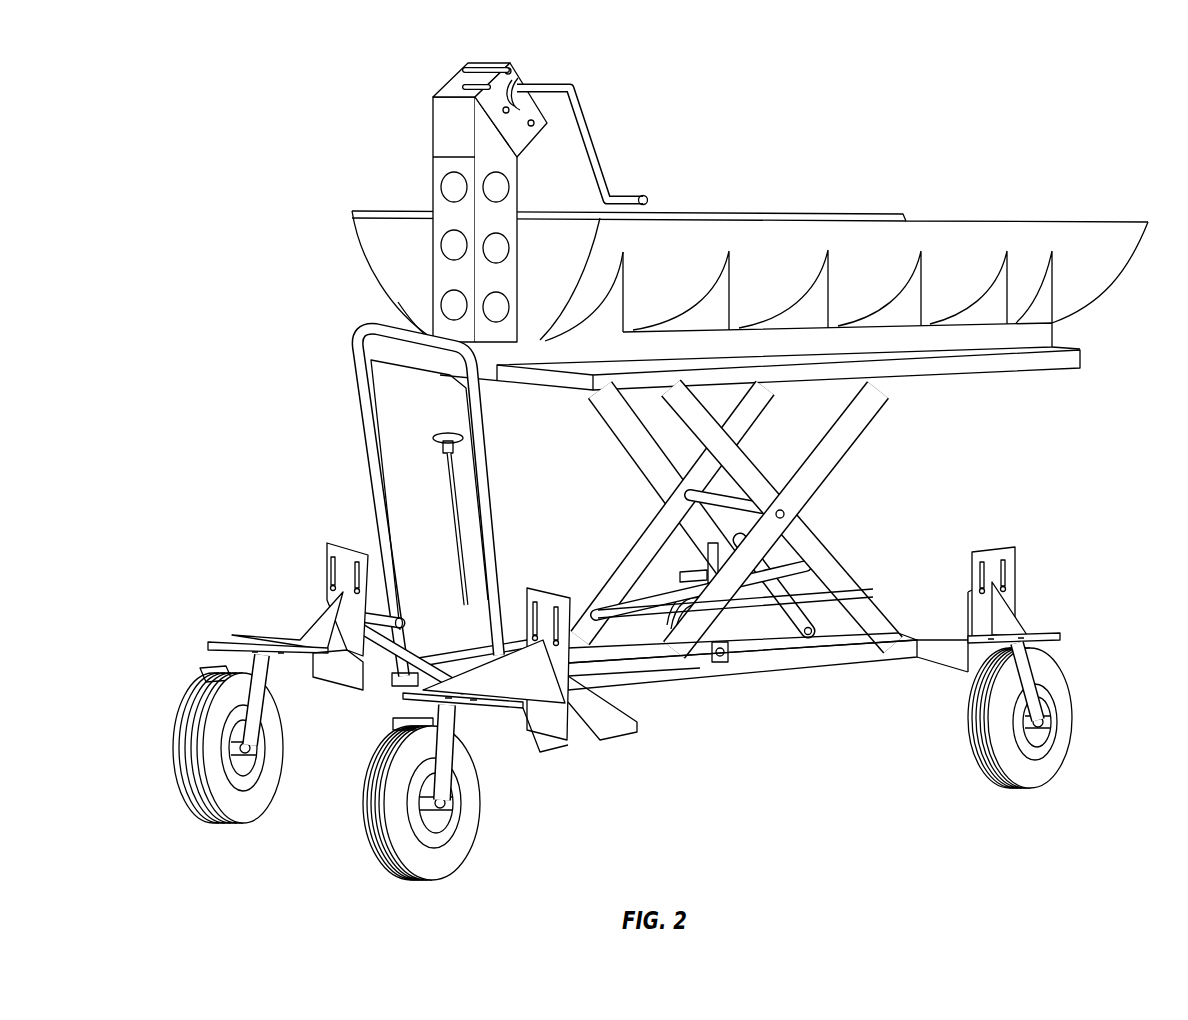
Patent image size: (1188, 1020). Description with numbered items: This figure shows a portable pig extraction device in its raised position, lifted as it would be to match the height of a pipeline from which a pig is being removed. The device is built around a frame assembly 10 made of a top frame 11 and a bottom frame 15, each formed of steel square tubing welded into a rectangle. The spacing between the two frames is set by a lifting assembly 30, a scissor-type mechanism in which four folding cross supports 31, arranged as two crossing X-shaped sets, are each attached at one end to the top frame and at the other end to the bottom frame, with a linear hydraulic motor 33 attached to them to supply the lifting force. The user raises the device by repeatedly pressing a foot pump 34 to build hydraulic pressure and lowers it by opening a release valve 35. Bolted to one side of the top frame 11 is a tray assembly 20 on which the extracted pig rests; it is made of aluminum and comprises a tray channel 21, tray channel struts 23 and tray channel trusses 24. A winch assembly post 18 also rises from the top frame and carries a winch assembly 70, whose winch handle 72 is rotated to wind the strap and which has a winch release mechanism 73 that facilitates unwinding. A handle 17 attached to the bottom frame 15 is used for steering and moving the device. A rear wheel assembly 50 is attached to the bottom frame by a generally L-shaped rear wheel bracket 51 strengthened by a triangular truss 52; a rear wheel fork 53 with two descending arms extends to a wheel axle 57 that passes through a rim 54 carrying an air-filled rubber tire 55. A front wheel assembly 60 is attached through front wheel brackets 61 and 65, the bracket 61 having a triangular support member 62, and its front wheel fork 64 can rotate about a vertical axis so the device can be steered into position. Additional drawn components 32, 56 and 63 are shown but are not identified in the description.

The frame assembly 10 is at (846, 630).
The top frame 11 is at (1085, 358).
The bottom frame 15 is at (645, 688).
The handle 17 is at (405, 509).
The winch assembly post 18 is at (437, 160).
The tray assembly 20 is at (764, 258).
The tray channel 21 is at (1122, 250).
The tray channel struts 23 is at (963, 340).
The tray channel trusses 24 is at (817, 282).
The lifting assembly 30 is at (754, 556).
The folding cross supports 31 is at (754, 556).
The cross brace 32 is at (690, 497).
The linear hydraulic motor 33 is at (733, 603).
The foot pump 34 is at (392, 617).
The release valve 35 is at (440, 437).
The rear wheel assembly 50 is at (1038, 658).
The rear wheel bracket 51 is at (1010, 552).
The triangular truss 52 is at (1008, 620).
The rear wheel fork 53 is at (1040, 672).
The rim 54 is at (1054, 727).
The tire 55 is at (1075, 700).
The base plate 56 is at (1048, 637).
The wheel axle 57 is at (1020, 722).
The front wheel assembly 60 is at (405, 711).
The front wheel bracket 61 is at (582, 606).
The triangular support member 62 is at (456, 676).
The base plate 63 is at (400, 700).
The front wheel fork 64 is at (470, 755).
The front wheel bracket 65 is at (578, 735).
The winch assembly 70 is at (509, 110).
The winch handle 72 is at (603, 158).
The winch release mechanism 73 is at (487, 68).